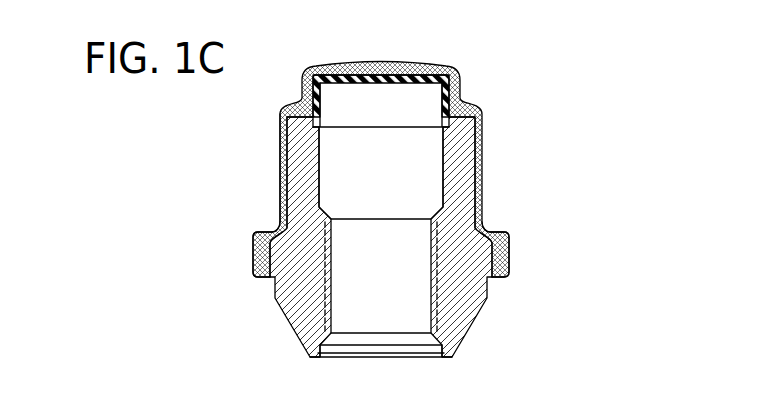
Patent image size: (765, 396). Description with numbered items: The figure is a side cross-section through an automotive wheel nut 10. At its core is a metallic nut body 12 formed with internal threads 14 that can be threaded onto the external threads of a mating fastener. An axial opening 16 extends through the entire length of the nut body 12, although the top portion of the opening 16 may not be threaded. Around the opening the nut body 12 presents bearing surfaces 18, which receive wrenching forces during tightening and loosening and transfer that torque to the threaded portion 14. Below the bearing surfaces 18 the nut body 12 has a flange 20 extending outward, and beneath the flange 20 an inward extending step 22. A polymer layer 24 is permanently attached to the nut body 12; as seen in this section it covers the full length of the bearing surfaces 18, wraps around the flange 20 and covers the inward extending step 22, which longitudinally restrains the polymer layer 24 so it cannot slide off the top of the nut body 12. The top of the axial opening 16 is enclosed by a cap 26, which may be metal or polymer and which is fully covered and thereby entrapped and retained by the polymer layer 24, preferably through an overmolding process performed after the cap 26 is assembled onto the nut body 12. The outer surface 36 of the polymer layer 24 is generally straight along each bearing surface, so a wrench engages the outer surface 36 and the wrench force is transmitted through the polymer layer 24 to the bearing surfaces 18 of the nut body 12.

The automotive wheel nut 10 is at (454, 47).
The nut body 12 is at (463, 197).
The internal threads 14 is at (333, 311).
The axial opening 16 is at (408, 152).
The bearing surfaces 18 is at (288, 179).
The flange 20 is at (283, 250).
The inward extending step 22 is at (268, 253).
The polymer layer 24 is at (483, 112).
The cap 26 is at (353, 102).
The outer surface 36 is at (280, 152).